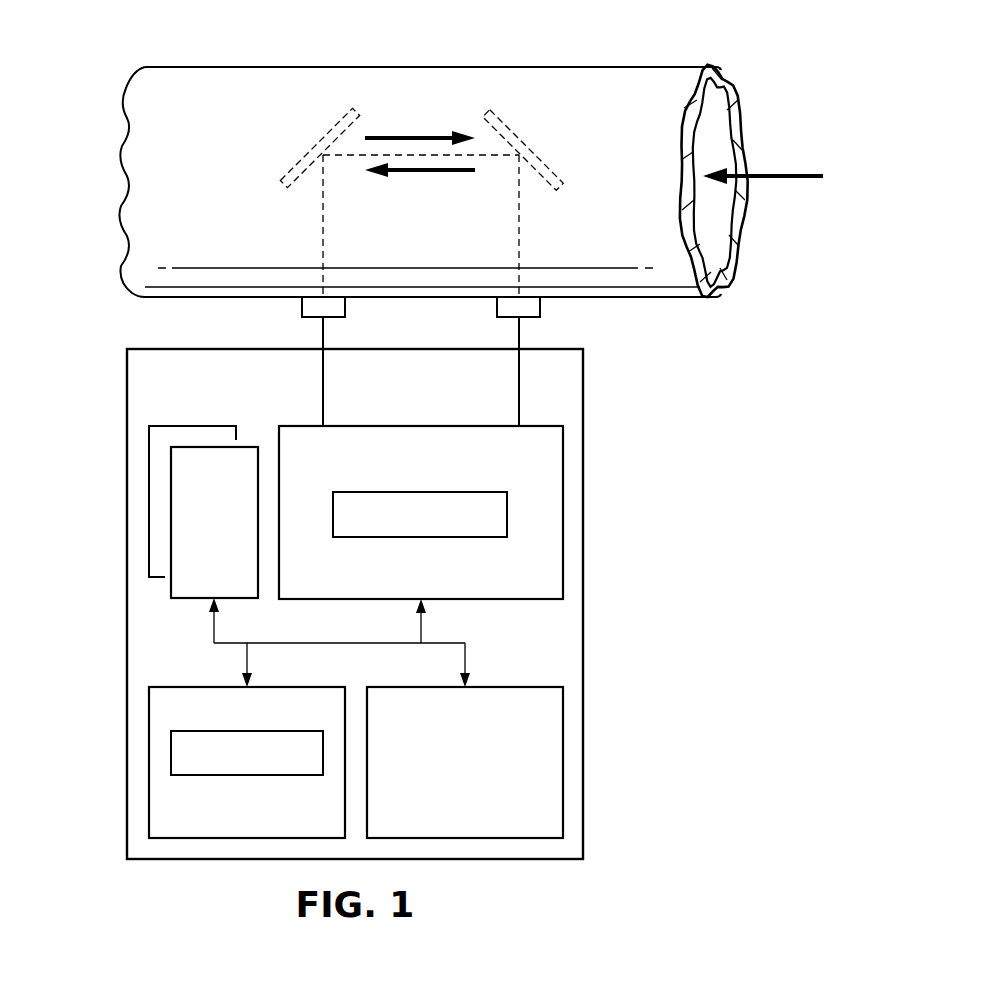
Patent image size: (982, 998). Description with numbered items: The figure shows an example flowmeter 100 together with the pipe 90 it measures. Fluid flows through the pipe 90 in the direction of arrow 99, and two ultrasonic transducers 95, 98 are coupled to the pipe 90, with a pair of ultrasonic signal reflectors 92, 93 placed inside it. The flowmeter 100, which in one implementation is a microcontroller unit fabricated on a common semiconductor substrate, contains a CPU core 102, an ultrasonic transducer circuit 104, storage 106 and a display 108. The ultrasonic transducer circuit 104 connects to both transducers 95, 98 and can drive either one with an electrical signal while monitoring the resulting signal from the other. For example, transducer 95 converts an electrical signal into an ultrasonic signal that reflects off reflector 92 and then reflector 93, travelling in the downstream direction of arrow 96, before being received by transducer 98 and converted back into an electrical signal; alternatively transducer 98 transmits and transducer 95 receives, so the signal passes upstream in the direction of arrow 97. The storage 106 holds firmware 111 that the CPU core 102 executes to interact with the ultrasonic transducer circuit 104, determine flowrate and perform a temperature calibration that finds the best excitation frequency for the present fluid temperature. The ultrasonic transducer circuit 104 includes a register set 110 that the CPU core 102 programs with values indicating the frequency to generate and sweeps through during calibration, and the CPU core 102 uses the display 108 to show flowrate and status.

The pipe 90 is at (360, 63).
The ultrasonic signal reflector 92 is at (522, 140).
The ultrasonic signal reflector 93 is at (318, 140).
The ultrasonic transducer 95 is at (540, 305).
The arrow 96 is at (420, 173).
The arrow 97 is at (421, 135).
The ultrasonic transducer 98 is at (302, 305).
The arrow 99 is at (790, 175).
The flowmeter 100 is at (121, 392).
The CPU core 102 is at (194, 566).
The ultrasonic transducer circuit 104 is at (430, 426).
The storage 106 is at (192, 687).
The display 108 is at (446, 793).
The register set 110 is at (419, 537).
The firmware 111 is at (237, 775).